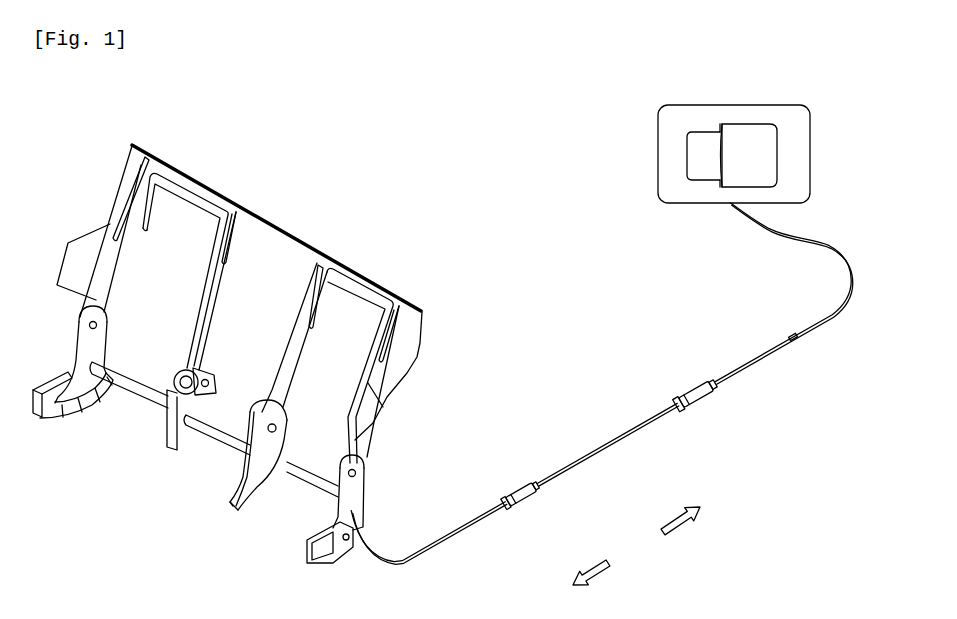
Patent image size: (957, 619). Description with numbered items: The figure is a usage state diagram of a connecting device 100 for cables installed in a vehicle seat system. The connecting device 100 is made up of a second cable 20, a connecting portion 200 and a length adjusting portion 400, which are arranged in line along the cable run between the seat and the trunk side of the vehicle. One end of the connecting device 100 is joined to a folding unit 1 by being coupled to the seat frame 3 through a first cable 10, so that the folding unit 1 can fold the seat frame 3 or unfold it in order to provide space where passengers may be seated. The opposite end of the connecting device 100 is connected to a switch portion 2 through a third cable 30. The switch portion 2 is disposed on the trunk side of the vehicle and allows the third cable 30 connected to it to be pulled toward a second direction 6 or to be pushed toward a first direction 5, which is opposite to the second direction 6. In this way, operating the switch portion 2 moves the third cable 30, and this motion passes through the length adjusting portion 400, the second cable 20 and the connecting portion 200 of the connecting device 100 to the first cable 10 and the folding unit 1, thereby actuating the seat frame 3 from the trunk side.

The folding unit 1 is at (350, 498).
The switch portion 2 is at (657, 155).
The seat frame 3 is at (200, 188).
The first direction 5 is at (583, 581).
The second direction 6 is at (689, 516).
The first cable 10 is at (458, 533).
The second cable 20 is at (642, 440).
The third cable 30 is at (738, 373).
The connecting device for cables 100 is at (602, 402).
The connecting portion 200 is at (518, 483).
The length adjusting portion 400 is at (694, 386).